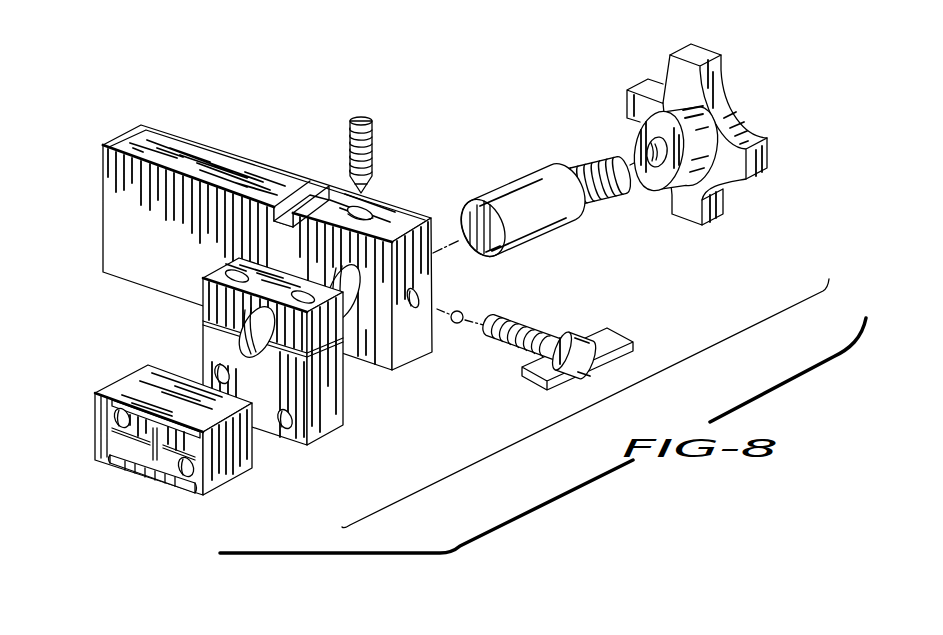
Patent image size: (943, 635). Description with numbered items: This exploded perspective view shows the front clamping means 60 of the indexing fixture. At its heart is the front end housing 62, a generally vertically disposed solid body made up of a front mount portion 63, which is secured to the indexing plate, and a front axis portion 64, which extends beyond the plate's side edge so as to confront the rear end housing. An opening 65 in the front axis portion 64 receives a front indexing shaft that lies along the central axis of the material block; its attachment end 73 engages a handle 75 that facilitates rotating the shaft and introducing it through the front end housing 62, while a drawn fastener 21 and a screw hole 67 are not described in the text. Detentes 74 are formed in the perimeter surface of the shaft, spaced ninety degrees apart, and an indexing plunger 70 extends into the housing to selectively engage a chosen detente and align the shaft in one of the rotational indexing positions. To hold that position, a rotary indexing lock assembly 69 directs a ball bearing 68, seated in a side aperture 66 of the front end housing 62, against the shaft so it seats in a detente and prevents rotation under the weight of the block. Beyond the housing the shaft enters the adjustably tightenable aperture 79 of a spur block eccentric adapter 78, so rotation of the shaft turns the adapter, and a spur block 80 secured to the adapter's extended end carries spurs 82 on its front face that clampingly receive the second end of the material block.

The clamping screw 21 is at (540, 204).
The front clamping means 60 is at (543, 416).
The front end housing 62 is at (97, 235).
The front mount portion 63 is at (163, 257).
The front axis portion 64 is at (397, 227).
The opening 65 is at (350, 290).
The side aperture 66 is at (412, 310).
The top hole 67 is at (370, 207).
The ball bearing 68 is at (463, 312).
The rotary indexing lock assembly 69 is at (538, 330).
The indexing plunger 70 is at (373, 145).
The attachment end 73 is at (607, 187).
The detentes 74 is at (470, 212).
The handle 75 is at (740, 113).
The spur block eccentric adapter 78 is at (330, 400).
The adjustably tightenable aperture 79 is at (257, 360).
The spur block 80 is at (127, 388).
The spurs 82 is at (150, 455).